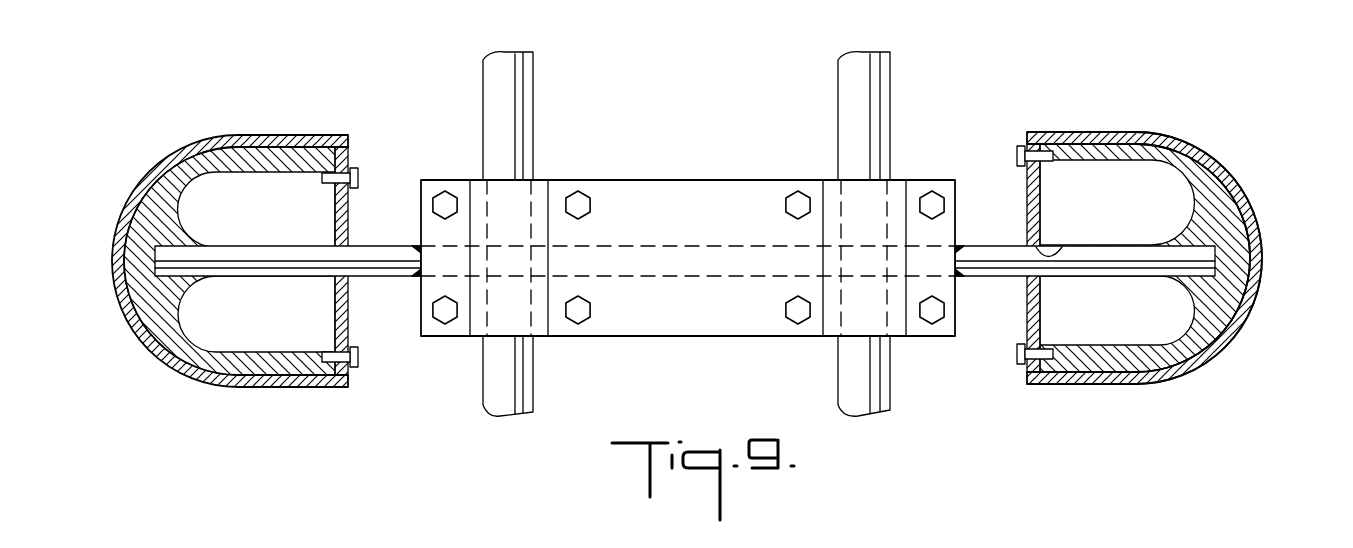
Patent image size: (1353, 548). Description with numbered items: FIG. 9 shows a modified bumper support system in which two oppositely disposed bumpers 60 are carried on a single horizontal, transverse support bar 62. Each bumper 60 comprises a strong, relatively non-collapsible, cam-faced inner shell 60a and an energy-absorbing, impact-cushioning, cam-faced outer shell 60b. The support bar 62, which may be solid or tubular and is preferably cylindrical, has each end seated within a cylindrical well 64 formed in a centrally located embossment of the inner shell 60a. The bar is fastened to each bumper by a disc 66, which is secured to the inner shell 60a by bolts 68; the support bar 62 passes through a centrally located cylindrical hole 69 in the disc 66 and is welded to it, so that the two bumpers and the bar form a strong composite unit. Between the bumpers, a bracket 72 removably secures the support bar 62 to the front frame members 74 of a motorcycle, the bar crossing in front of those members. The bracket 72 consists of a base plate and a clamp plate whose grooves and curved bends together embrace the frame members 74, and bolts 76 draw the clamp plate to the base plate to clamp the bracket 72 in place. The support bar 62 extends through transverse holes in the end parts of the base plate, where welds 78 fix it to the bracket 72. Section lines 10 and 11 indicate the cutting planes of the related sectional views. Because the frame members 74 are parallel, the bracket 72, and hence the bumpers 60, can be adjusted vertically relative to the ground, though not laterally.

The section line 10- 10 is at (68, 305).
The section line 11- 11 is at (1012, 86).
The bumper 60 is at (179, 134).
The inner shell 60a is at (1240, 207).
The outer shell 60b is at (1175, 138).
The support bar 62 is at (993, 247).
The cylindrical well 64 is at (1238, 300).
The disc 66 is at (346, 327).
The bolts 68 is at (1030, 352).
The cylindrical hole 69 is at (1045, 250).
The bracket 72 is at (701, 158).
The front frame members 74 is at (484, 75).
The bolts 76 is at (578, 320).
The welds 78 is at (420, 282).